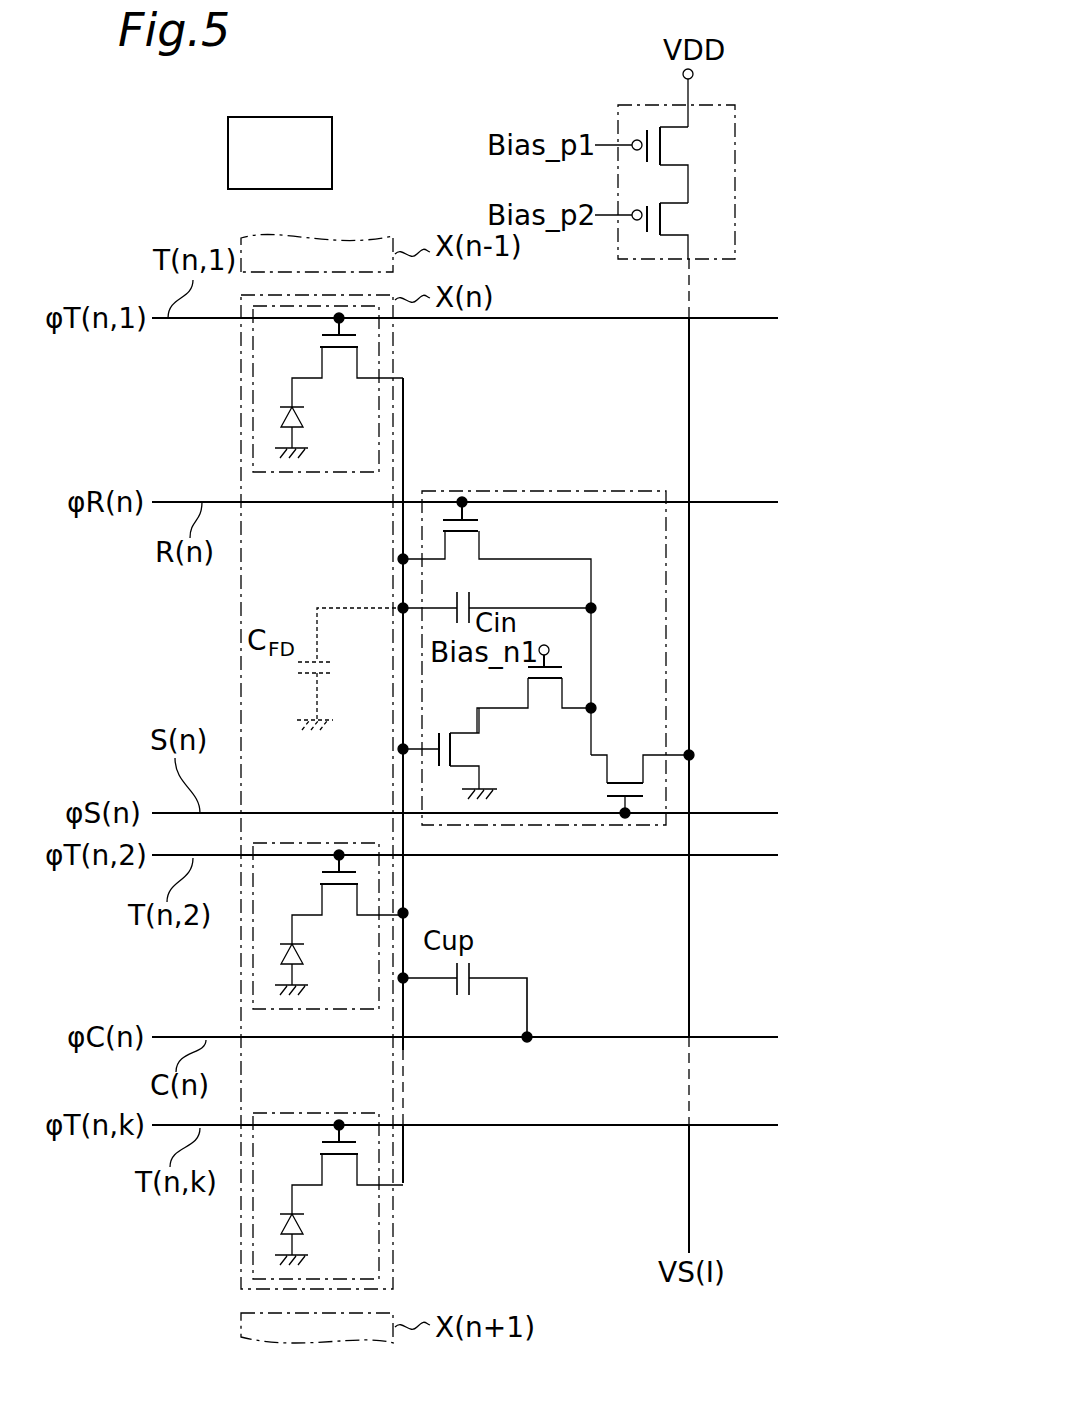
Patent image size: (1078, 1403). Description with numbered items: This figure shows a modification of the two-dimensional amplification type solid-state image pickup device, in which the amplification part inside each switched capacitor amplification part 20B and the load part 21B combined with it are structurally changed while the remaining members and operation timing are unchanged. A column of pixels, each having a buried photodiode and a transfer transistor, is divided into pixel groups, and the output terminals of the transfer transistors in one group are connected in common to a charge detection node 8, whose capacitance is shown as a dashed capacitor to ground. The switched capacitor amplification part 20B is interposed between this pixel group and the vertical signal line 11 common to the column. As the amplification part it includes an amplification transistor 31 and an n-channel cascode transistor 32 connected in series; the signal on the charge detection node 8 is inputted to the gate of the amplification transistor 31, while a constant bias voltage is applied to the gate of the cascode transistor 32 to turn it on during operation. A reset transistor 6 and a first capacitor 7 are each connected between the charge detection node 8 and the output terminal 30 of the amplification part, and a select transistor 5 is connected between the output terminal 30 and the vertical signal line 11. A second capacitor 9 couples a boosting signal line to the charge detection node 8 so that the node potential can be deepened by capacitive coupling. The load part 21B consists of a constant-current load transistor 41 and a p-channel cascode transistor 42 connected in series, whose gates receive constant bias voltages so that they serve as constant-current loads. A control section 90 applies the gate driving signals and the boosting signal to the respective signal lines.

The select transistor 5 is at (626, 782).
The reset transistor 6 is at (461, 532).
The capacitor 7 is at (471, 598).
The charge detection node 8 is at (405, 845).
The capacitor 9 is at (471, 962).
The vertical signal line 11 is at (691, 582).
The switched capacitor amplification part 20B is at (545, 491).
The load part 21B is at (715, 182).
The output terminal 30 is at (523, 722).
The amplification transistor 31 is at (452, 747).
The n-channel cascode transistor 32 is at (545, 679).
The constant-current load transistor 41 is at (662, 146).
The p-channel cascode transistor 42 is at (662, 216).
The control section 90 is at (334, 152).